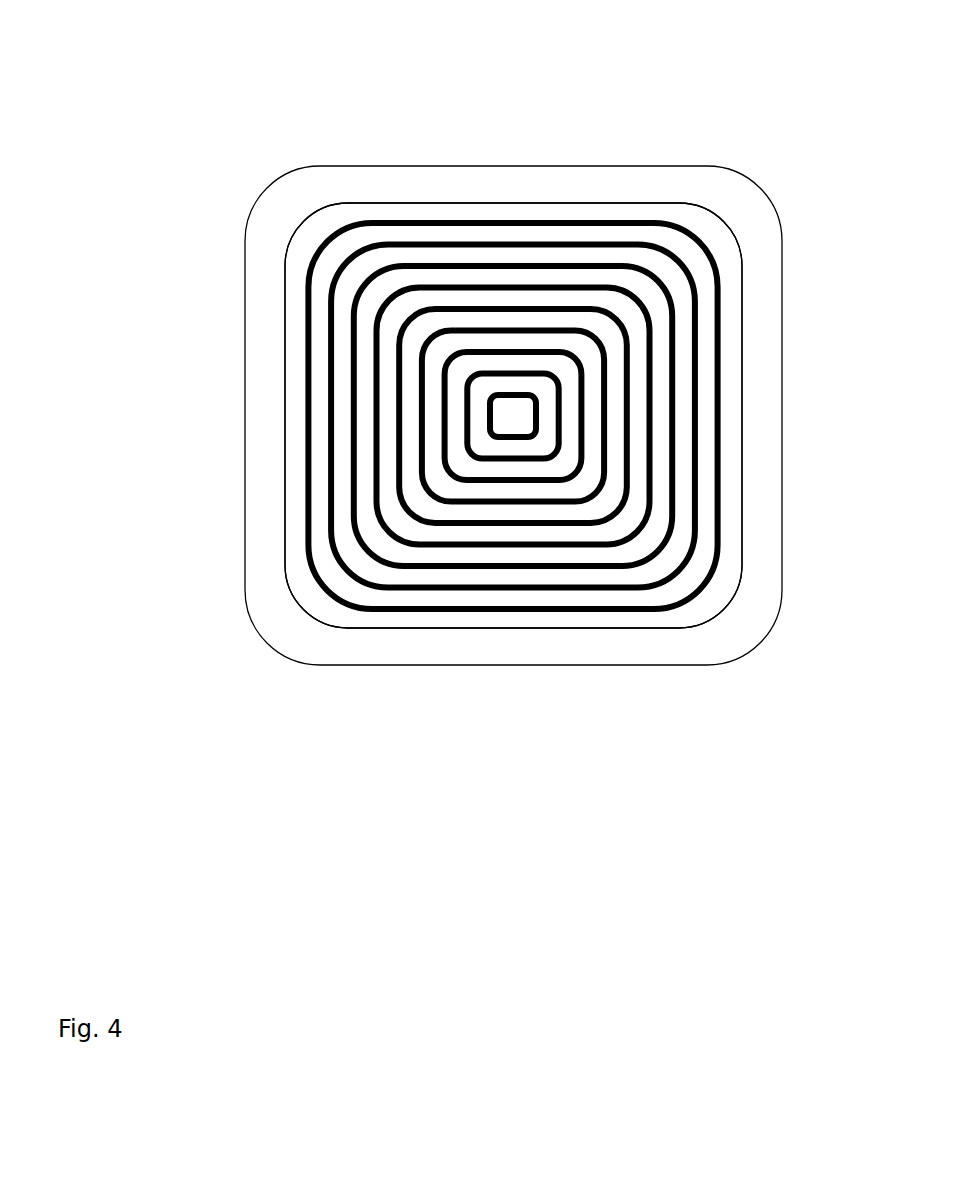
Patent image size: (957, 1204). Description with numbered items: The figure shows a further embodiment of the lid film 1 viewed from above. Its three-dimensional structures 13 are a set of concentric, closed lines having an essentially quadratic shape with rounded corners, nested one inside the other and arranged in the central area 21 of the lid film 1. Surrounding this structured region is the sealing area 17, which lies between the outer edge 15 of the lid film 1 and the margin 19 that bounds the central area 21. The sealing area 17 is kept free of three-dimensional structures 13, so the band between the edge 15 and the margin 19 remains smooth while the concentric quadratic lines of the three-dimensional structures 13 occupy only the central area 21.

The lid film 1 is at (594, 91).
The three-dimensional structures 13 is at (407, 608).
The edge 15 is at (781, 276).
The sealing area 17 is at (768, 395).
The margin 19 is at (632, 628).
The central area 21 is at (467, 619).